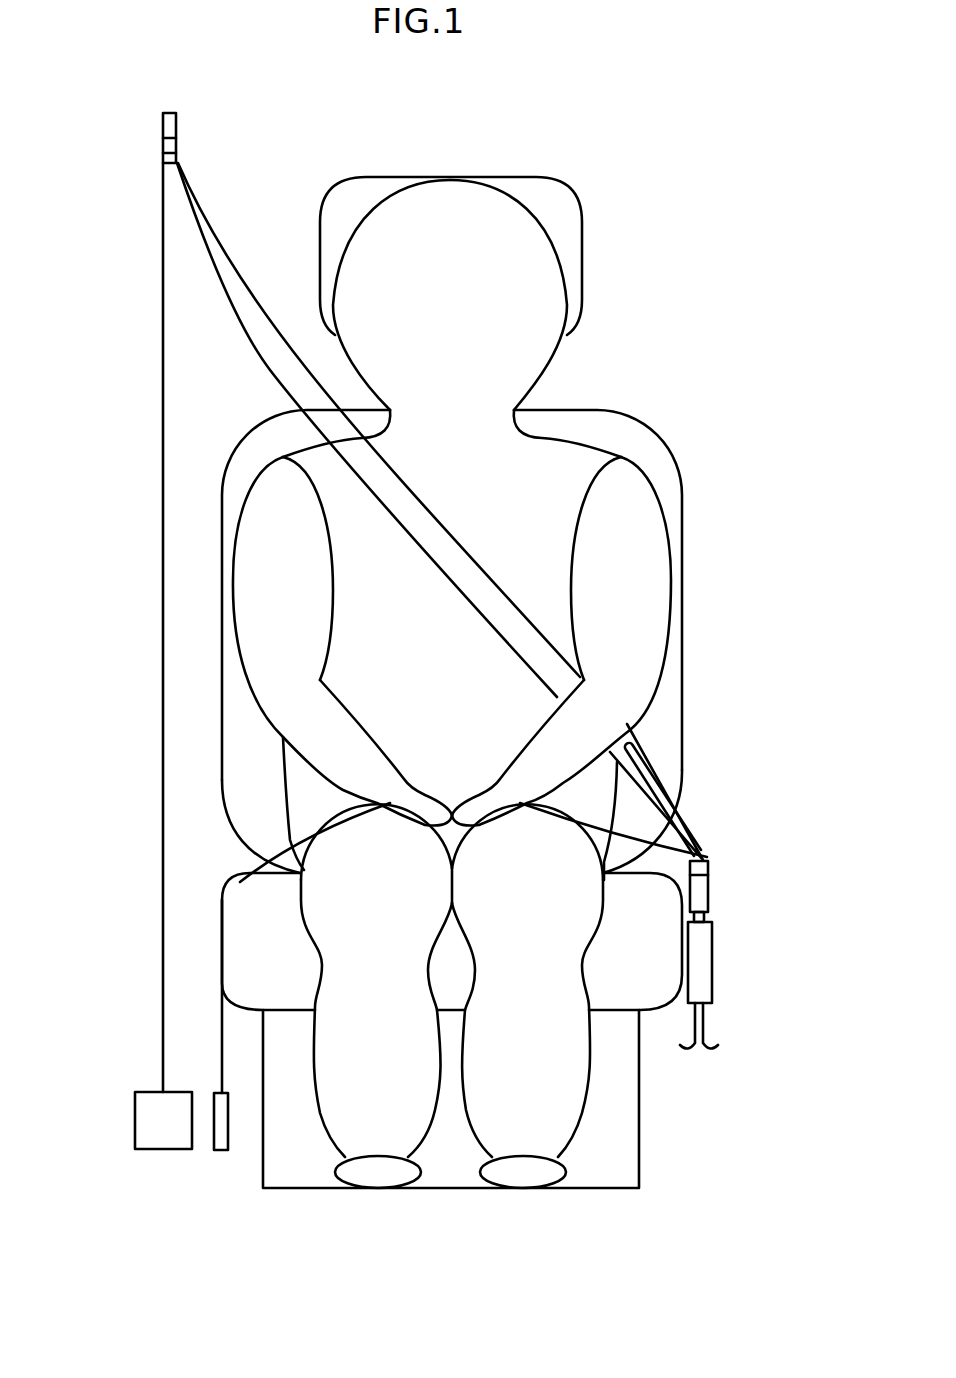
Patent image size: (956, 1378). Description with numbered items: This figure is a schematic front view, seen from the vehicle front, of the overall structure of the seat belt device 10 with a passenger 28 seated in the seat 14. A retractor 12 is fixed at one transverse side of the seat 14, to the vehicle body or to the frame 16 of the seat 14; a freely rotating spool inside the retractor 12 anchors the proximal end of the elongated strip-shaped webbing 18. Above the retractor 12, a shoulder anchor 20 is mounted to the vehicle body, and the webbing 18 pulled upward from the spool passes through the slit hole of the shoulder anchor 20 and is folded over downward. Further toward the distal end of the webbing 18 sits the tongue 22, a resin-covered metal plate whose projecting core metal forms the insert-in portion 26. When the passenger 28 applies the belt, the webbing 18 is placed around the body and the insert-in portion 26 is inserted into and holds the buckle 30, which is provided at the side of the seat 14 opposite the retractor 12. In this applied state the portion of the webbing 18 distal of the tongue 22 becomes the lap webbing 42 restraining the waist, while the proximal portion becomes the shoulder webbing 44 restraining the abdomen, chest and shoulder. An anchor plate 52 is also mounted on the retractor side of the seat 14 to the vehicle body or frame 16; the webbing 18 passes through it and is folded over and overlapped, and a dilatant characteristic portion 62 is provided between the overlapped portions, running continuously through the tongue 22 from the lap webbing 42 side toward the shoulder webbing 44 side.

The seat belt device 10 is at (273, 184).
The retractor 12 is at (135, 1123).
The seat 14 is at (682, 507).
The frame 16 is at (640, 1163).
The webbing 18 is at (163, 605).
The shoulder anchor 20 is at (176, 128).
The tongue 22 is at (708, 888).
The insert-in portion 26 is at (705, 916).
The passenger 28 is at (560, 460).
The buckle 30 is at (713, 978).
The lap webbing 42 is at (590, 833).
The shoulder webbing 44 is at (437, 530).
The anchor plate 52 is at (230, 1130).
The dilatant characteristic portion 62 is at (657, 780).